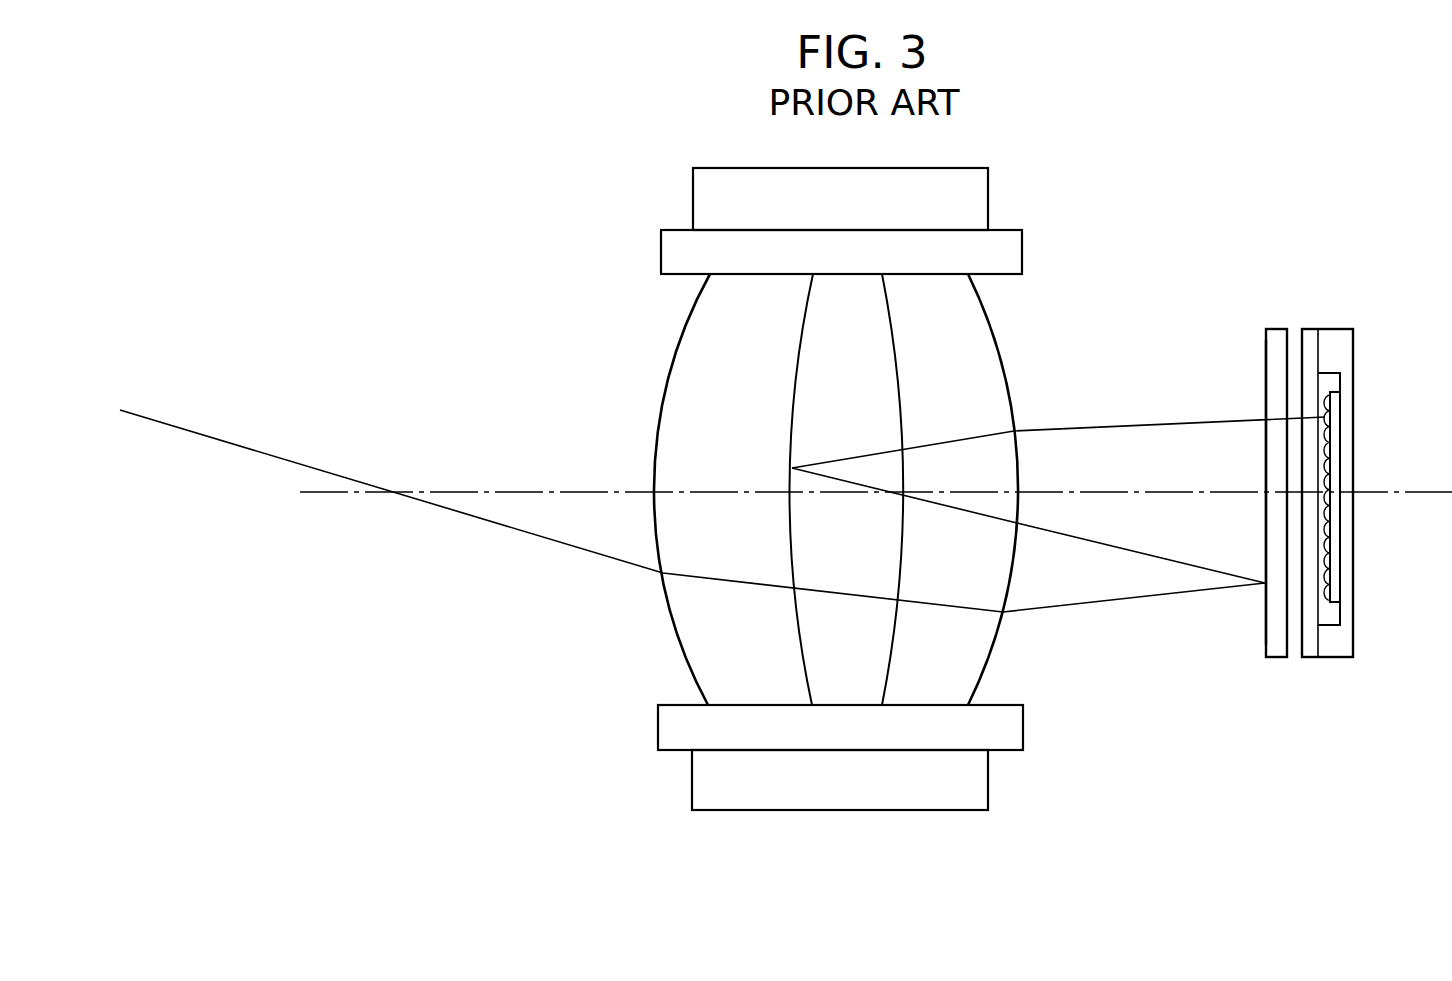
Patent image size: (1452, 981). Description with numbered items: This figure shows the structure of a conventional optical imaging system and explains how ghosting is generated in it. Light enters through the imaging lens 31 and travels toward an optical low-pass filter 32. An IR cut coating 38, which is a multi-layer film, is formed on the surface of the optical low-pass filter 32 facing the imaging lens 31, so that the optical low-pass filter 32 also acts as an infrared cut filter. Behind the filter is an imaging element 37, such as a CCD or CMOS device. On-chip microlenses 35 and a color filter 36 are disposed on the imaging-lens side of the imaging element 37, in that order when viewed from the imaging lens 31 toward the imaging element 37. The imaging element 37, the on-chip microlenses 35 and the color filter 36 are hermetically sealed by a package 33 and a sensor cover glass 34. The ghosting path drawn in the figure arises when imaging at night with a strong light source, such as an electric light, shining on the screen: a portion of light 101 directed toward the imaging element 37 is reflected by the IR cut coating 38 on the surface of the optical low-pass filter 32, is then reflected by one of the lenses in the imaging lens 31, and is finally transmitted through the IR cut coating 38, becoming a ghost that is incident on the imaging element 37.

The imaging lens 31 is at (977, 316).
The optical low-pass filter 32 is at (1277, 328).
The package 33 is at (1353, 347).
The sensor cover glass 34 is at (1315, 328).
The on-chip microlenses 35 is at (1323, 547).
The color filter 36 is at (1325, 578).
The imaging element 37 is at (1337, 567).
The IR cut coating 38 is at (1266, 357).
The light 101 is at (232, 443).